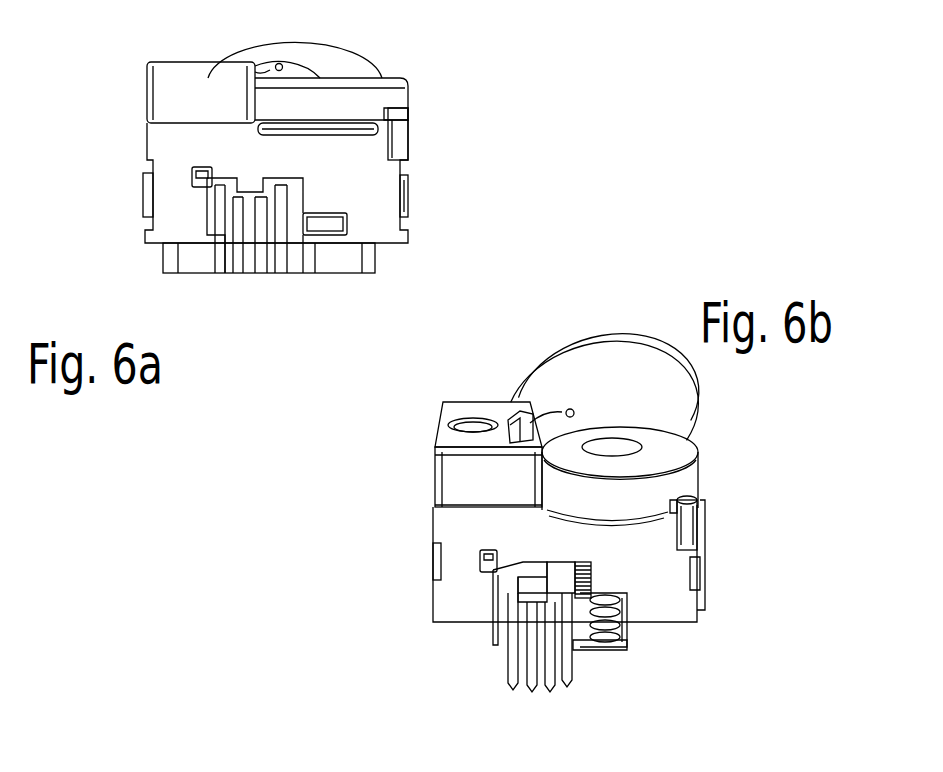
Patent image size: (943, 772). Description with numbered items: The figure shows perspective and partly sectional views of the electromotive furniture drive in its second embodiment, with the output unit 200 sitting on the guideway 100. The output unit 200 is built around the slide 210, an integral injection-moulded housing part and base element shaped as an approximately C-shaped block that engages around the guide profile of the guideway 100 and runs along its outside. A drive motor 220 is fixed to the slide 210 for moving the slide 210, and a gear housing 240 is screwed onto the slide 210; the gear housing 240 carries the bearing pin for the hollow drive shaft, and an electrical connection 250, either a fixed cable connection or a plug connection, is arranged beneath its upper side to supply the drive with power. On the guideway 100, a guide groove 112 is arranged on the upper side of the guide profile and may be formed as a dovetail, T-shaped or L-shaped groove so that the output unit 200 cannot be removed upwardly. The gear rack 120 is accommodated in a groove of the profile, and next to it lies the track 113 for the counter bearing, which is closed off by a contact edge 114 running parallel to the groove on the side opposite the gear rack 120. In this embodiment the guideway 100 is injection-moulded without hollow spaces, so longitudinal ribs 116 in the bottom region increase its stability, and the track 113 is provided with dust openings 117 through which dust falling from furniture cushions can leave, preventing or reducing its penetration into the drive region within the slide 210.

In FIG. 6a, the guideway 100 is at (142, 265).
In FIG. 6a, the output unit 200 is at (433, 77).
In FIG. 6a, the slide 210 is at (362, 173).
In FIG. 6b, the slide 210 is at (453, 565).
In FIG. 6a, the drive motor 220 is at (333, 55).
In FIG. 6b, the drive motor 220 is at (641, 393).
In FIG. 6a, the gear housing 240 is at (170, 90).
In FIG. 6b, the gear housing 240 is at (653, 455).
In FIG. 6b, the electrical connection 250 is at (473, 420).
In FIG. 6b, the guide groove 112 is at (527, 580).
In FIG. 6b, the track 113 is at (602, 640).
In FIG. 6a, the contact edge 114 is at (347, 222).
In FIG. 6b, the contact edge 114 is at (632, 635).
In FIG. 6a, the longitudinal ribs 116 is at (270, 230).
In FIG. 6b, the longitudinal ribs 116 is at (572, 680).
In FIG. 6b, the dust openings 117 is at (627, 618).
In FIG. 6b, the gear rack 120 is at (593, 575).